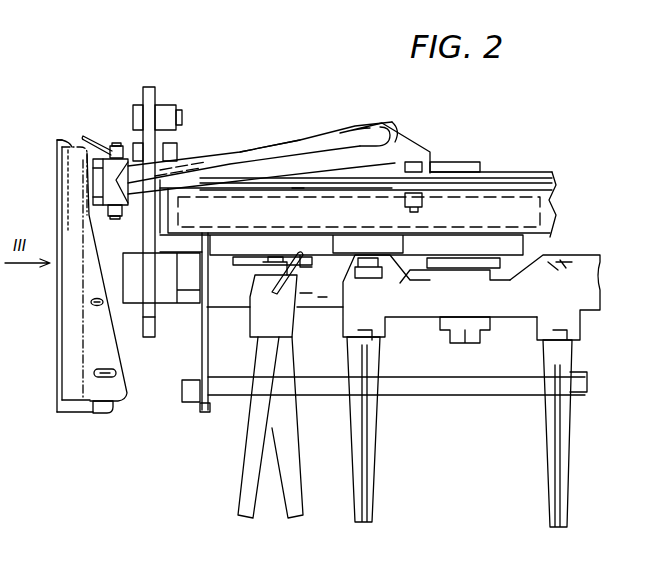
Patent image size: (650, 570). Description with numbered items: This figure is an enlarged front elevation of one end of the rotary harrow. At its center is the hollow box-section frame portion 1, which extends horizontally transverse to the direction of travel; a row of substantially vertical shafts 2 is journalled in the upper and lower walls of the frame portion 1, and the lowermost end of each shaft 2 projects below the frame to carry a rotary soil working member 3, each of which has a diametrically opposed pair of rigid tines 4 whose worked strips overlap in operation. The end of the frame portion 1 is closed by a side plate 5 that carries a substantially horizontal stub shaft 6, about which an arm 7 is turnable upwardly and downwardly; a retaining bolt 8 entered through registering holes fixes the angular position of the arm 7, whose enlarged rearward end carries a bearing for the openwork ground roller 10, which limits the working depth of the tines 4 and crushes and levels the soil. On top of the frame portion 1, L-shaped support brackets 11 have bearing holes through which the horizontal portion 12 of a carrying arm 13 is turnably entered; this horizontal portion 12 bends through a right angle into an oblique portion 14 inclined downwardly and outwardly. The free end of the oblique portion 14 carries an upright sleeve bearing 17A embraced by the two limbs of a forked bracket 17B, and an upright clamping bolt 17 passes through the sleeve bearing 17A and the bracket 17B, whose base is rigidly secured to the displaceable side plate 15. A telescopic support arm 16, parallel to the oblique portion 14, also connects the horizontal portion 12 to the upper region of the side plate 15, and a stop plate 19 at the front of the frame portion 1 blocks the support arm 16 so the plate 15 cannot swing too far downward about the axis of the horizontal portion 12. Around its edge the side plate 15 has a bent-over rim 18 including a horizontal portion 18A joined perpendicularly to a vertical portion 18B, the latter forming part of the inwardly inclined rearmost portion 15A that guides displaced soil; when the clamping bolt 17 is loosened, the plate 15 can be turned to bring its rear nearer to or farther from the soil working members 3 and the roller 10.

The hollow box-section frame portion 1 is at (546, 165).
The shaft 2 is at (476, 176).
The rotary soil working member 3 is at (232, 502).
The tine 4 is at (270, 432).
The side plate 5 is at (162, 108).
The stub shaft 6 is at (178, 149).
The arm 7 is at (150, 87).
The retaining bolt 8 is at (183, 117).
The ground roller 10 is at (199, 415).
The support bracket 11 is at (408, 146).
The horizontal portion 12 is at (406, 120).
The carrying arm 13 is at (279, 126).
The oblique portion 14 is at (237, 158).
The displaceable side plate 15 is at (51, 192).
The rearmost portion 15A is at (113, 346).
The telescopic support arm 16 is at (100, 183).
The clamping bolt 17 is at (113, 210).
The sleeve bearing 17A is at (110, 184).
The forked bracket 17B is at (108, 149).
The rim 18 is at (60, 148).
The horizontal rim portion 18A is at (95, 413).
The vertical rim portion 18B is at (65, 413).
The stop plate 19 is at (298, 190).